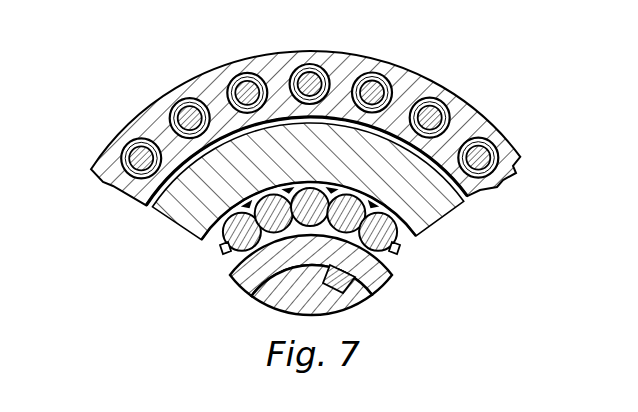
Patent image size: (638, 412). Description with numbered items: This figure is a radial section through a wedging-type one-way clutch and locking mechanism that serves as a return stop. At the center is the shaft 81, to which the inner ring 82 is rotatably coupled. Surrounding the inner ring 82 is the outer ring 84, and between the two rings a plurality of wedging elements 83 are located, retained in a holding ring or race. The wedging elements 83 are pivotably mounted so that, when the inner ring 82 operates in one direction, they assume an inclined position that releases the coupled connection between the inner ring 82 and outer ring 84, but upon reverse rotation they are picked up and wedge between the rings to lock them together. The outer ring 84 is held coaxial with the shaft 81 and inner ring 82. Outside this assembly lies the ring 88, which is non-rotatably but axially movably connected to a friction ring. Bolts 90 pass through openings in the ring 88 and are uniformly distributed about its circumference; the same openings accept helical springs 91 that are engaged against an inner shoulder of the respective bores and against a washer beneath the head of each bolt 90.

The shaft 81 is at (280, 297).
The inner ring 82 is at (250, 283).
The wedging elements 83 is at (232, 229).
The outer ring 84 is at (282, 130).
The ring 88 is at (104, 155).
The bolt 90 is at (378, 84).
The helical springs 91 is at (449, 111).